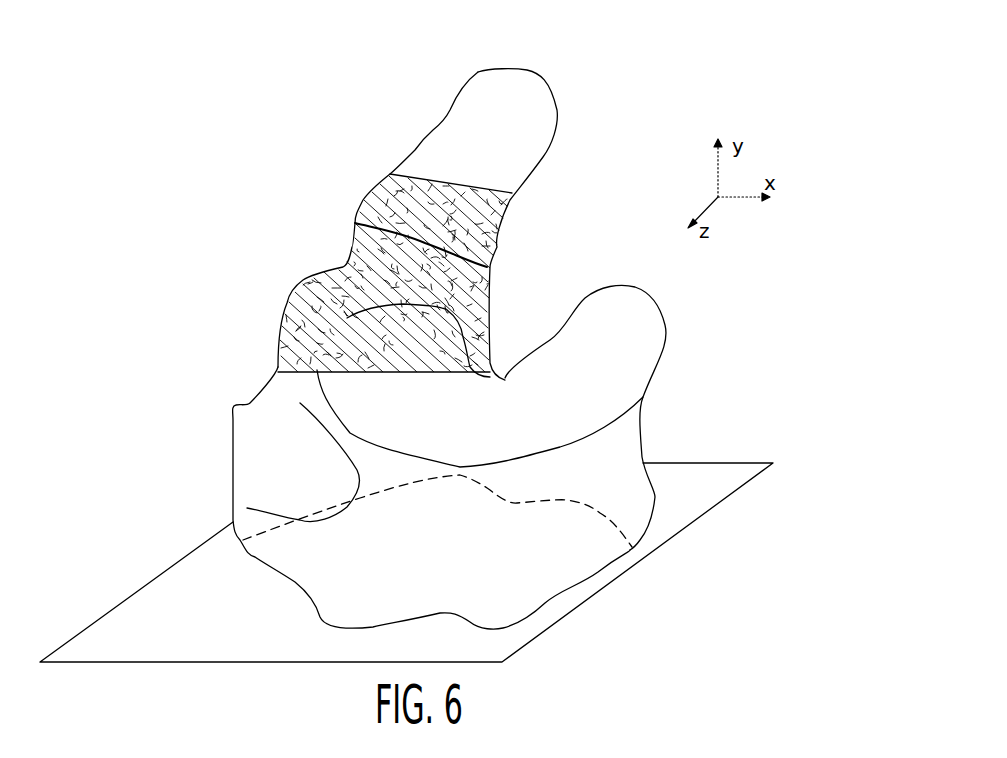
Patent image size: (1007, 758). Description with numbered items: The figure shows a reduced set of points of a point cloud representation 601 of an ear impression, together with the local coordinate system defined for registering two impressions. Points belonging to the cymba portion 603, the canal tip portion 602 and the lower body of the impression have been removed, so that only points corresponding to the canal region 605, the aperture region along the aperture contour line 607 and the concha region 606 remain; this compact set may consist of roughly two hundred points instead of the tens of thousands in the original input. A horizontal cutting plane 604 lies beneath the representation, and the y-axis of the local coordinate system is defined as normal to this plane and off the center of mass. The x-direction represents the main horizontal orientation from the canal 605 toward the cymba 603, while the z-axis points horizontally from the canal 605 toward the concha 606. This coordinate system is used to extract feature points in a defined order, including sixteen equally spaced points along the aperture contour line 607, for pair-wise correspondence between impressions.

The point cloud representation 601 is at (616, 118).
The canal tip portion 602 is at (500, 68).
The cymba portion 603 is at (657, 313).
The horizontal cutting plane 604 is at (533, 585).
The canal region 605 is at (393, 175).
The concha region 606 is at (286, 304).
The aperture contour line 607 is at (353, 227).